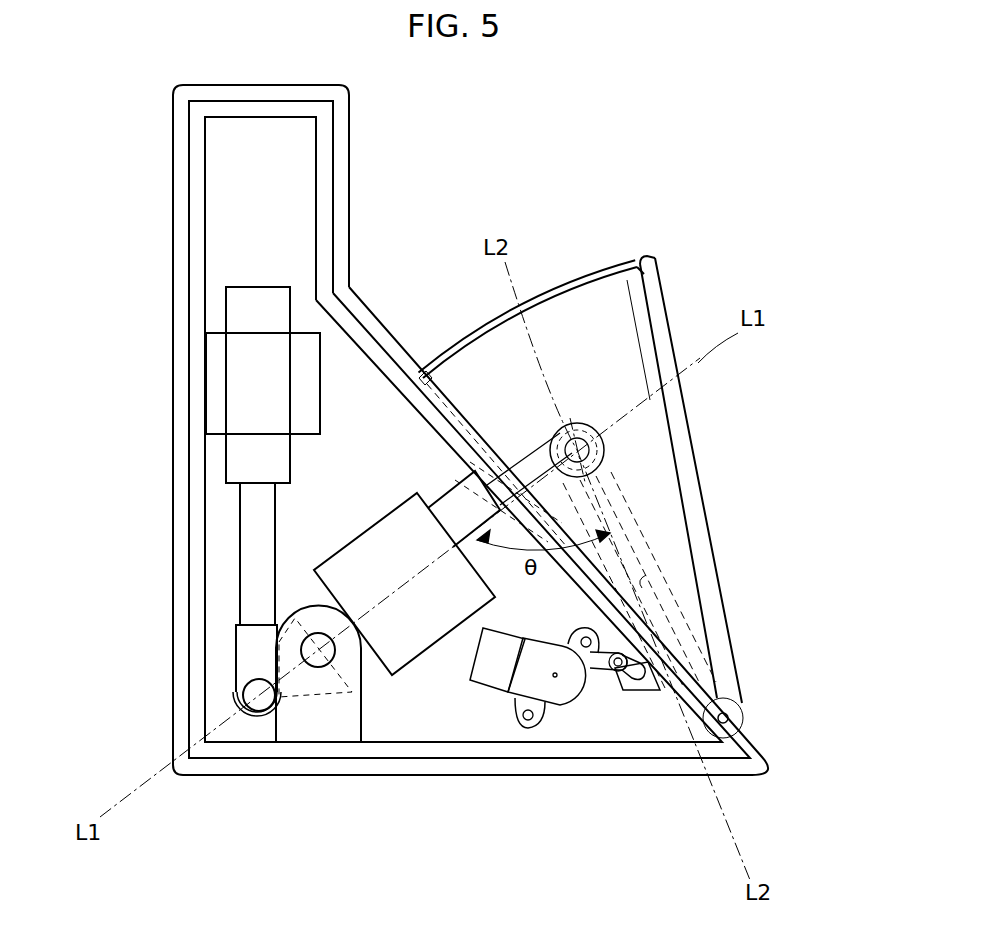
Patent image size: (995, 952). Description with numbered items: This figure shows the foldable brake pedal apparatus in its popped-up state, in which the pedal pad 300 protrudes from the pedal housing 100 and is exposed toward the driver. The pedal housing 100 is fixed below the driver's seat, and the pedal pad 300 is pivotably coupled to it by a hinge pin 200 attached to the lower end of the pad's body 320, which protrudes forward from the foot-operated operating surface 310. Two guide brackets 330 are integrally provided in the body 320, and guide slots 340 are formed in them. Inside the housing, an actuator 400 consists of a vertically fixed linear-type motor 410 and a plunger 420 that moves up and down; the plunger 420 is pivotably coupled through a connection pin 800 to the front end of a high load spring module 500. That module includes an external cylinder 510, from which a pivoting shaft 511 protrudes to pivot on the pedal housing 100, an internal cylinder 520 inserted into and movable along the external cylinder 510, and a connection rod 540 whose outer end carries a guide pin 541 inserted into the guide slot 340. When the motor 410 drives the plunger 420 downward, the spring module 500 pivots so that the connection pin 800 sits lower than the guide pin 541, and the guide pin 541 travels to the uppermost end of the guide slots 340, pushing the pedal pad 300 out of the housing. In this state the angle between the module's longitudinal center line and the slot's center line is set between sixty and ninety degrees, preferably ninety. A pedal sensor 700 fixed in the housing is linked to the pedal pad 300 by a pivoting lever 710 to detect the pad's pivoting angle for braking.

The pedal housing 100 is at (183, 214).
The hinge pin 200 is at (742, 718).
The pedal pad 300 is at (623, 460).
The operating surface 310 is at (660, 285).
The body 320 is at (568, 322).
The guide bracket 330 is at (600, 378).
The guide slot 340 is at (648, 578).
The actuator 400 is at (171, 501).
The linear-type motor 410 is at (255, 312).
The plunger 420 is at (255, 572).
The high load spring module 500 is at (336, 738).
The external cylinder 510 is at (435, 630).
The pivoting shaft 511 is at (322, 668).
The internal cylinder 520 is at (458, 490).
The connection rod 540 is at (515, 425).
The guide pin 541 is at (600, 452).
The pedal sensor 700 is at (532, 684).
The pivoting lever 710 is at (603, 666).
The connection pin 800 is at (273, 690).